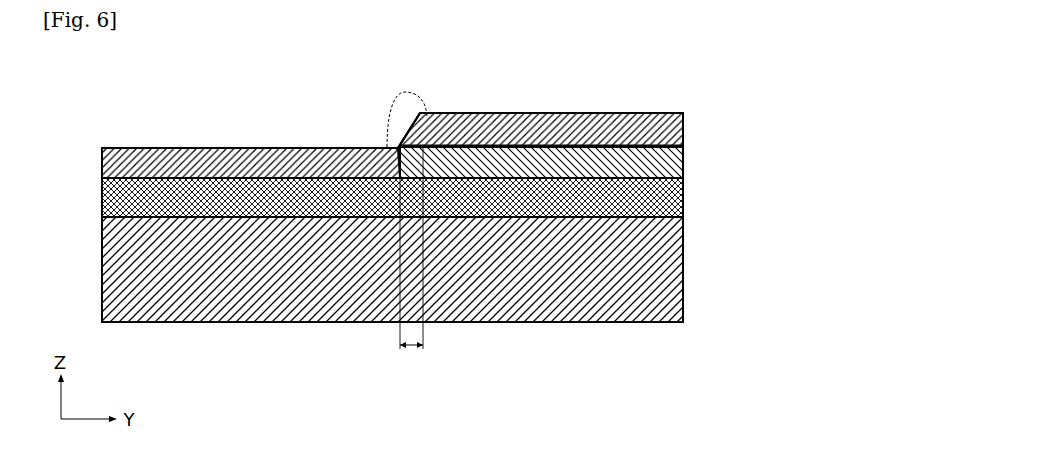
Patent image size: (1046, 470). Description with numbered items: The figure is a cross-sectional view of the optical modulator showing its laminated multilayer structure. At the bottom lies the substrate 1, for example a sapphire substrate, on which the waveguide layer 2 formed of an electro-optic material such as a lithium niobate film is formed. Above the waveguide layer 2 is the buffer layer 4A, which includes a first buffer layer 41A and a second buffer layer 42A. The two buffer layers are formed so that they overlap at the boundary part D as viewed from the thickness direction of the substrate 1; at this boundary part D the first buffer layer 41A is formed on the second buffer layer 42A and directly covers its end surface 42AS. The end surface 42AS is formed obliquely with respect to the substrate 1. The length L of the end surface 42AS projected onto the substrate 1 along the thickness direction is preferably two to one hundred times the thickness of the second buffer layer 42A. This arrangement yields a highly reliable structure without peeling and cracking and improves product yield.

The substrate 1 is at (683, 271).
The waveguide layer 2 is at (683, 191).
The buffer layer 4A is at (430, 208).
The first buffer layer 41A is at (253, 220).
The second buffer layer 42A is at (553, 187).
The end surface of the second buffer layer 42AS is at (397, 142).
The boundary part D is at (420, 98).
The length of the end surface projected onto the substrate L is at (411, 262).